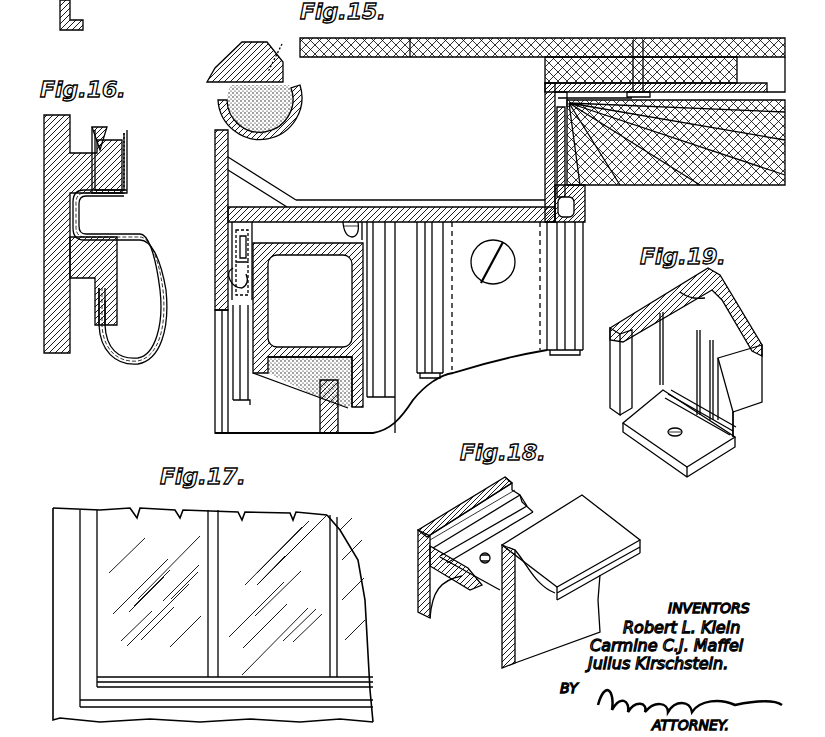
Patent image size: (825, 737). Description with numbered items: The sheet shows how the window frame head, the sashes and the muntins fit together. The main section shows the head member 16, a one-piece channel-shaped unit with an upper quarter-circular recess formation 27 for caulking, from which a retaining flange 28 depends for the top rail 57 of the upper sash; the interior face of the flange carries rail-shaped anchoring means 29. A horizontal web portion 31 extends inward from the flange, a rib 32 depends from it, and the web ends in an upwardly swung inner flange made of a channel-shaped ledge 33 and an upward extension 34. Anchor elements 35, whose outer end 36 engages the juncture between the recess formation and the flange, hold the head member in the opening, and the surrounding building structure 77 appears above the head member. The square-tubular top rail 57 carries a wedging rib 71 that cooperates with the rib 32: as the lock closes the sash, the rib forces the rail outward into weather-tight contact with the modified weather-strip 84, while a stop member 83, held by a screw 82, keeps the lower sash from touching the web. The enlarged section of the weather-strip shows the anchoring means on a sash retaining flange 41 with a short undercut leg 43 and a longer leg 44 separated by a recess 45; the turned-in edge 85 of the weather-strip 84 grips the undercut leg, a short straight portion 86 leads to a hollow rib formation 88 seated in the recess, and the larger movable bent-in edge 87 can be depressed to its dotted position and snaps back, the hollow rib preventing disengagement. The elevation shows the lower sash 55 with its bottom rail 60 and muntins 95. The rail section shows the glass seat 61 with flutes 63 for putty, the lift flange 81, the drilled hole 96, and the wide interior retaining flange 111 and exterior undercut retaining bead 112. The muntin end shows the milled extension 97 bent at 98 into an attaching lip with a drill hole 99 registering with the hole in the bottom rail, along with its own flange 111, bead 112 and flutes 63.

In FIG. 15, the head member 16 is at (212, 155).
In FIG. 15, the recess formation 27 is at (303, 94).
In FIG. 15, the retaining flange 28 is at (213, 260).
In FIG. 15, the anchoring means 29 is at (224, 265).
In FIG. 16, the anchoring means 29 is at (95, 173).
In FIG. 15, the web portion 31 is at (463, 210).
In FIG. 15, the rib 32 is at (363, 235).
In FIG. 15, the channel-shaped ledge 33 is at (580, 203).
In FIG. 15, the upward extension 34 is at (547, 111).
In FIG. 15, the anchor element 35 is at (558, 133).
In FIG. 15, the outer end 36 is at (268, 182).
In FIG. 16, the sash retaining flange 41 is at (45, 304).
In FIG. 15, the undercut leg 43 is at (172, 0).
In FIG. 16, the undercut leg 43 is at (110, 136).
In FIG. 15, the longer leg 44 is at (243, 0).
In FIG. 16, the longer leg 44 is at (87, 355).
In FIG. 16, the recess 45 is at (74, 192).
In FIG. 17, the lower sash 55 is at (101, 523).
In FIG. 15, the top rail 57 is at (308, 243).
In FIG. 17, the bottom rail 60 is at (368, 690).
In FIG. 18, the bottom rail 60 is at (603, 590).
In FIG. 18, the seat 61 is at (477, 574).
In FIG. 19, the seat 61 is at (693, 311).
In FIG. 15, the flute 63 is at (272, 370).
In FIG. 18, the flute 63 is at (521, 509).
In FIG. 19, the flute 63 is at (720, 322).
In FIG. 15, the wedging rib 71 is at (347, 230).
In FIG. 15, the top wall 77 is at (462, 0).
In FIG. 18, the lift flange 81 is at (613, 528).
In FIG. 15, the screw 82 is at (503, 273).
In FIG. 15, the stop member 83 is at (493, 343).
In FIG. 15, the modified weather-strip 84 is at (385, 245).
In FIG. 16, the modified weather-strip 84 is at (153, 367).
In FIG. 16, the turned-in edge 85 is at (107, 132).
In FIG. 16, the straight portion 86 is at (126, 164).
In FIG. 16, the movable bent-in edge 87 is at (168, 338).
In FIG. 15, the hollow rib formation 88 is at (204, 0).
In FIG. 16, the hollow rib formation 88 is at (81, 206).
In FIG. 17, the muntin 95 is at (333, 558).
In FIG. 19, the muntin 95 is at (763, 380).
In FIG. 18, the drill hole 96 is at (487, 565).
In FIG. 19, the extension 97 is at (735, 431).
In FIG. 19, the bend 98 is at (708, 455).
In FIG. 19, the drill hole 99 is at (677, 434).
In FIG. 15, the interior retaining flange 111 is at (362, 413).
In FIG. 18, the interior retaining flange 111 is at (515, 585).
In FIG. 19, the interior retaining flange 111 is at (700, 297).
In FIG. 15, the exterior undercut retaining bead 112 is at (263, 380).
In FIG. 18, the exterior undercut retaining bead 112 is at (450, 515).
In FIG. 19, the exterior undercut retaining bead 112 is at (747, 338).